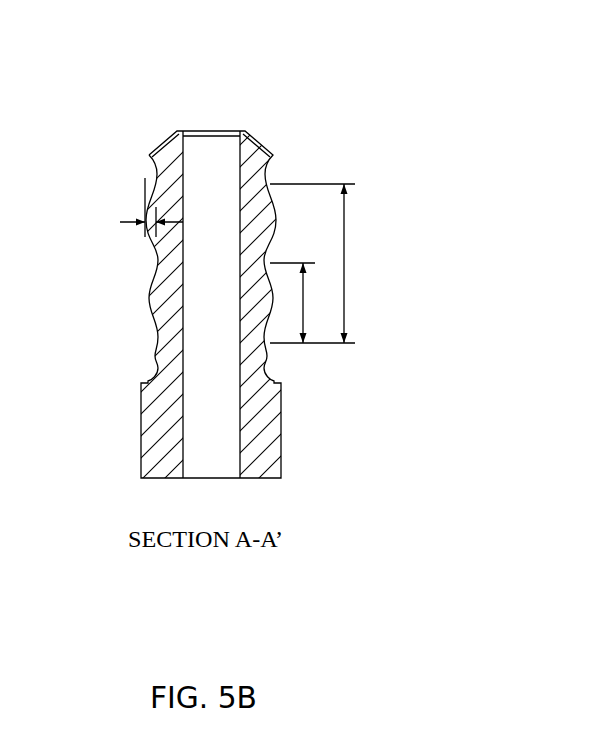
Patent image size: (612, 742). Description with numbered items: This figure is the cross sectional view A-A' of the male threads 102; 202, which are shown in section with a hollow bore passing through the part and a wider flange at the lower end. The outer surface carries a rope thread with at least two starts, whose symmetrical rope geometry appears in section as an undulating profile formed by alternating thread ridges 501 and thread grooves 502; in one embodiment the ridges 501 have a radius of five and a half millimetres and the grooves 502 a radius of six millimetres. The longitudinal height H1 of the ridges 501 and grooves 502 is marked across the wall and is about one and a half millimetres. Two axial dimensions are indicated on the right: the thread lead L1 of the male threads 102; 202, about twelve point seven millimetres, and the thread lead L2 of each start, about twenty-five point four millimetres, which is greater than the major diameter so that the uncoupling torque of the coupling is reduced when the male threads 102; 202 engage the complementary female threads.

The male thread 102 is at (284, 114).
The male thread 202 is at (306, 245).
The thread ridge 501 is at (150, 303).
The thread groove 502 is at (157, 262).
The longitudinal height H1 is at (135, 207).
The thread lead L1 is at (292, 303).
The thread lead of each start L2 is at (312, 263).